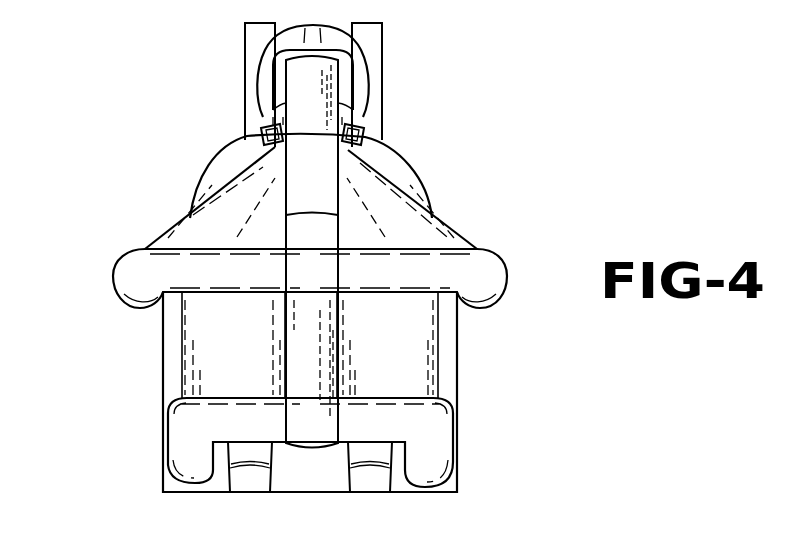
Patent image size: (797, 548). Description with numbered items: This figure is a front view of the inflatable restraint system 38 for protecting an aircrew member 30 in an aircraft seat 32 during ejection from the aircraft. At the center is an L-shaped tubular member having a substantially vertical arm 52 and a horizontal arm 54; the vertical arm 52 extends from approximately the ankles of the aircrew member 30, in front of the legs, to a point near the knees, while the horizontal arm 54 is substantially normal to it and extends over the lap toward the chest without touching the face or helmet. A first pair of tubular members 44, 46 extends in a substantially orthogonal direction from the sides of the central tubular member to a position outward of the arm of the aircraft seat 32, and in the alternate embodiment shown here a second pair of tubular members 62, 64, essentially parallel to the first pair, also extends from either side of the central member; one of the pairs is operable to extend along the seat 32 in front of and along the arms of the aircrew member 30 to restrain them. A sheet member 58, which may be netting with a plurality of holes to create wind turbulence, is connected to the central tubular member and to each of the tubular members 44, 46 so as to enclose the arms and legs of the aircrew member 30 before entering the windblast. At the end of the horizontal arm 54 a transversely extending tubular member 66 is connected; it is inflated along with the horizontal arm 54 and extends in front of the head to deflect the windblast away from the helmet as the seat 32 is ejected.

The inflatable restraint system 38 is at (152, 131).
The transversely extending tubular member 66 is at (285, 80).
The horizontal arm 54 is at (325, 178).
The vertical arm 52 is at (309, 442).
The crewmember 30 is at (400, 163).
The sheet member 58 is at (407, 224).
The tubular member 44 is at (118, 256).
The tubular member 46 is at (495, 254).
The aircraft seat 32 is at (458, 378).
The tubular member 64 is at (190, 459).
The tubular member 62 is at (433, 462).